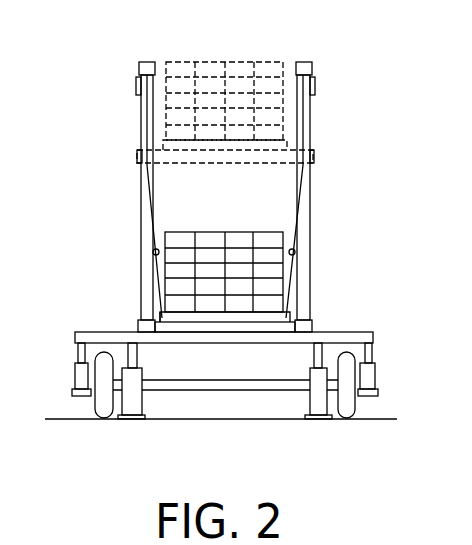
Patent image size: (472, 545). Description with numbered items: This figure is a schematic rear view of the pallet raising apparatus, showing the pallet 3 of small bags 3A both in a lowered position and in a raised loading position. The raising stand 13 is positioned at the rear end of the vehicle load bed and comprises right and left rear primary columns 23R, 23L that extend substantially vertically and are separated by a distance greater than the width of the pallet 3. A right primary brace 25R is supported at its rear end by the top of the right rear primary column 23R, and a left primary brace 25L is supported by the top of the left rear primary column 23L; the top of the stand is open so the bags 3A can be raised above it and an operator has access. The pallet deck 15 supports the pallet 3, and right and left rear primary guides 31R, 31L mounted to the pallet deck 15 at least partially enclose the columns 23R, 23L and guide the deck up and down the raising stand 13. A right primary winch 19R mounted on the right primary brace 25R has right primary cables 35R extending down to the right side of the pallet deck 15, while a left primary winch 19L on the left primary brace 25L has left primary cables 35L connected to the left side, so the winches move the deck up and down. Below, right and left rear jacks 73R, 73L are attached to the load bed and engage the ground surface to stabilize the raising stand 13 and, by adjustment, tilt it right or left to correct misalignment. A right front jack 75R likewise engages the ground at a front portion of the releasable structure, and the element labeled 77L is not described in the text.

The pallet 3 is at (291, 318).
The bags 3A is at (282, 231).
The raising stand 13 is at (141, 196).
The pallet deck 15 is at (161, 317).
The left primary winch 19L is at (136, 83).
The right primary winch 19R is at (315, 83).
The left rear primary column 23L is at (142, 180).
The right rear primary column 23R is at (310, 180).
The left primary brace 25L is at (146, 61).
The right primary brace 25R is at (304, 61).
The left rear primary guide 31L is at (137, 326).
The right rear primary guide 31R is at (313, 326).
The left primary cables 35L is at (149, 230).
The right primary cables 35R is at (301, 232).
The left rear jack 73L is at (142, 398).
The right rear jack 73R is at (310, 398).
The right front jack 75R is at (376, 378).
The left caster 77L is at (76, 377).